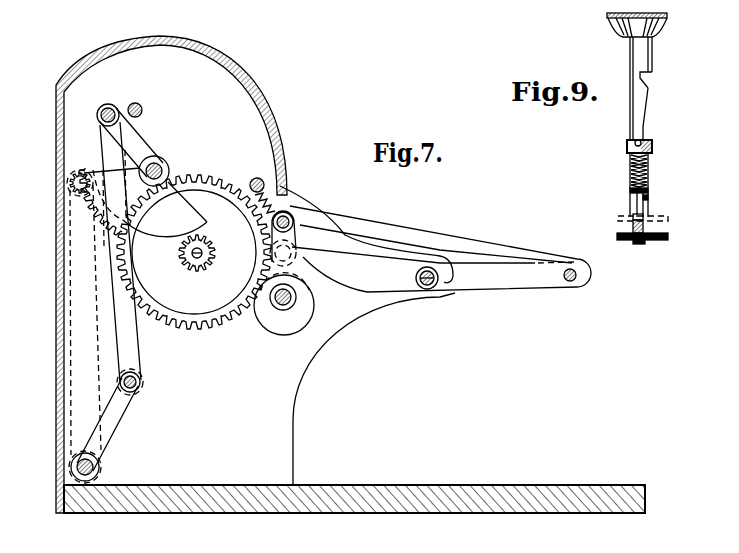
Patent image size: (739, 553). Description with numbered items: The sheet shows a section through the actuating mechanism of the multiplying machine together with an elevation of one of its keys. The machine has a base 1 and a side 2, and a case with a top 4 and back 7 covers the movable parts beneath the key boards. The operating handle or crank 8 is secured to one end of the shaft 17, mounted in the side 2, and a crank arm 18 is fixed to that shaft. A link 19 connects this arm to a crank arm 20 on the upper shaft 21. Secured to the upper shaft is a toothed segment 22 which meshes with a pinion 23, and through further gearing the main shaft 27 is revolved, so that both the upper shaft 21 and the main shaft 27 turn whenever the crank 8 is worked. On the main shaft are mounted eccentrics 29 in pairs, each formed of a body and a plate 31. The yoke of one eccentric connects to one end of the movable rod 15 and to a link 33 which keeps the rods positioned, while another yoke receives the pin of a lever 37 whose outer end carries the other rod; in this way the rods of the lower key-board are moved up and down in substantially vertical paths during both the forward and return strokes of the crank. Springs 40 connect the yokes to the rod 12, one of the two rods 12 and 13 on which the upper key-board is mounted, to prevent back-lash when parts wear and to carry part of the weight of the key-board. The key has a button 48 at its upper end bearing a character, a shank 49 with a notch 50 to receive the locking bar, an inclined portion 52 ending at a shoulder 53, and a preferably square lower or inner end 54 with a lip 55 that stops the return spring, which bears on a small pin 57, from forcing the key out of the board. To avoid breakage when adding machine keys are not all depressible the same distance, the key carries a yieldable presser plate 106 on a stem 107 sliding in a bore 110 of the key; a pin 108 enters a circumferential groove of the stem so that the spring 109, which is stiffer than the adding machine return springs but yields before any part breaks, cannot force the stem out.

In FIG. 7, the base 1 is at (470, 483).
In FIG. 7, the side 2 is at (340, 389).
In FIG. 7, the top 4 is at (266, 103).
In FIG. 7, the back 7 is at (58, 172).
In FIG. 7, the operating handle or crank 8 is at (80, 372).
In FIG. 7, the rod 12 is at (258, 178).
In FIG. 7, the rod 13 is at (138, 108).
In FIG. 7, the movable rod 15 is at (292, 212).
In FIG. 7, the shaft 17 is at (100, 468).
In FIG. 7, the crank arm 18 is at (110, 420).
In FIG. 7, the link 19 is at (120, 252).
In FIG. 7, the crank arm 20 is at (130, 140).
In FIG. 7, the upper shaft 21 is at (167, 168).
In FIG. 7, the toothed segment 22 is at (175, 248).
In FIG. 7, the pinion 23 is at (200, 268).
In FIG. 7, the main shaft 27 is at (280, 305).
In FIG. 7, the eccentric 29 is at (307, 315).
In FIG. 7, the plate 31 is at (296, 240).
In FIG. 7, the link 33 is at (468, 248).
In FIG. 7, the lever 37 is at (434, 269).
In FIG. 7, the spring 40 is at (270, 203).
In FIG. 9, the button 48 is at (653, 28).
In FIG. 9, the shank 49 is at (648, 58).
In FIG. 9, the notch 50 is at (642, 78).
In FIG. 9, the inclined portion 52 is at (648, 112).
In FIG. 9, the shoulder 53 is at (652, 140).
In FIG. 9, the lower or inner end 54 is at (648, 190).
In FIG. 9, the lip 55 is at (650, 216).
In FIG. 9, the small pin 57 is at (636, 141).
In FIG. 9, the yieldable presser plate 106 is at (668, 239).
In FIG. 9, the stem 107 is at (633, 228).
In FIG. 9, the pin 108 is at (648, 199).
In FIG. 9, the spring 109 is at (630, 178).
In FIG. 9, the bore 110 is at (630, 161).